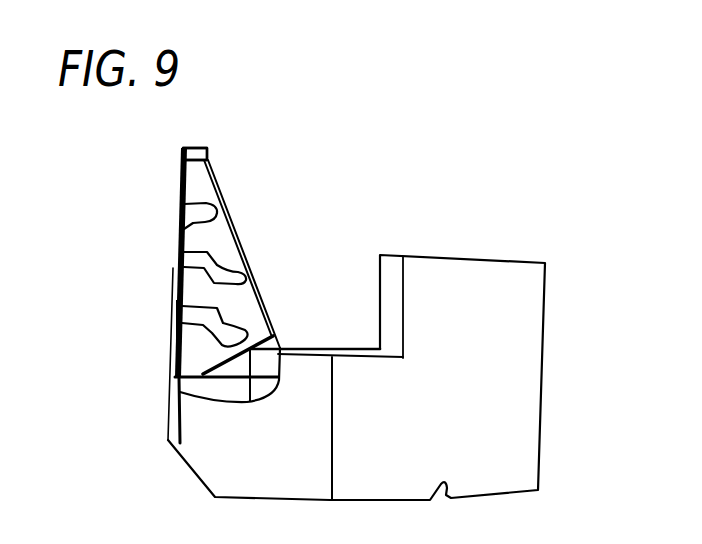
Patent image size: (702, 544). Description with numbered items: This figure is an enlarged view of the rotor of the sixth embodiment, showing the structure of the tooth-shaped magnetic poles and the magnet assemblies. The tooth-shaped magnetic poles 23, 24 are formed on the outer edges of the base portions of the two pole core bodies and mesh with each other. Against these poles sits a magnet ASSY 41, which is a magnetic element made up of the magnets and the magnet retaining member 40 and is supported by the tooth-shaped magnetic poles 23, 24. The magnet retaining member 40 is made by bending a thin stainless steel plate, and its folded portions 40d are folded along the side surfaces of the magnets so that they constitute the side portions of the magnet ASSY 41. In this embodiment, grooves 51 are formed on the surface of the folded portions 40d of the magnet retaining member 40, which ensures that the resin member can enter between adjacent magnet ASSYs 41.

The tooth-shaped magnetic pole 23 is at (209, 154).
The tooth-shaped magnetic pole 24 is at (195, 154).
The magnet retaining member 40 is at (252, 301).
The folded portion 40d is at (231, 241).
The magnet ASSY 41 is at (180, 237).
The groove 51 is at (190, 317).